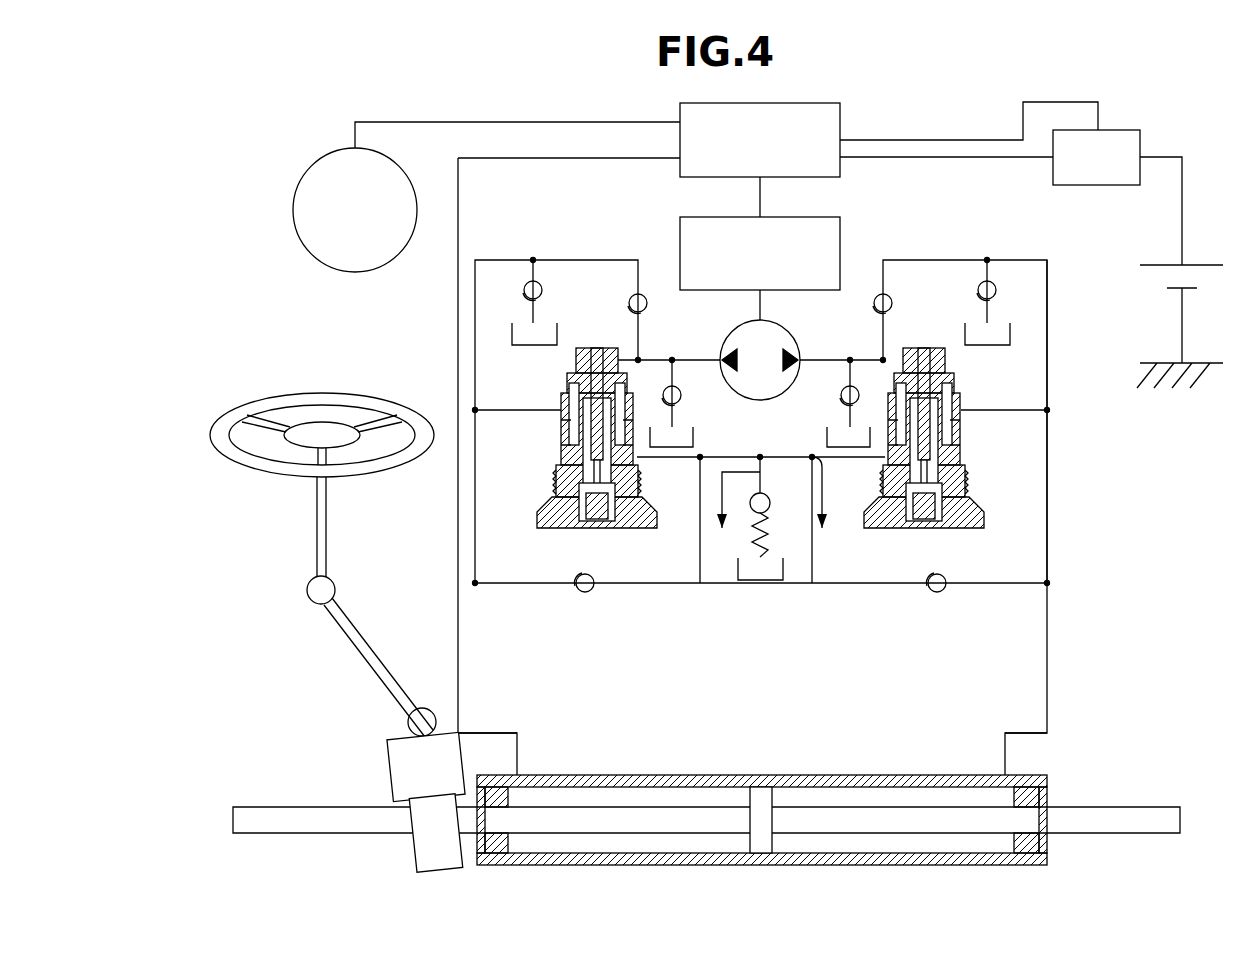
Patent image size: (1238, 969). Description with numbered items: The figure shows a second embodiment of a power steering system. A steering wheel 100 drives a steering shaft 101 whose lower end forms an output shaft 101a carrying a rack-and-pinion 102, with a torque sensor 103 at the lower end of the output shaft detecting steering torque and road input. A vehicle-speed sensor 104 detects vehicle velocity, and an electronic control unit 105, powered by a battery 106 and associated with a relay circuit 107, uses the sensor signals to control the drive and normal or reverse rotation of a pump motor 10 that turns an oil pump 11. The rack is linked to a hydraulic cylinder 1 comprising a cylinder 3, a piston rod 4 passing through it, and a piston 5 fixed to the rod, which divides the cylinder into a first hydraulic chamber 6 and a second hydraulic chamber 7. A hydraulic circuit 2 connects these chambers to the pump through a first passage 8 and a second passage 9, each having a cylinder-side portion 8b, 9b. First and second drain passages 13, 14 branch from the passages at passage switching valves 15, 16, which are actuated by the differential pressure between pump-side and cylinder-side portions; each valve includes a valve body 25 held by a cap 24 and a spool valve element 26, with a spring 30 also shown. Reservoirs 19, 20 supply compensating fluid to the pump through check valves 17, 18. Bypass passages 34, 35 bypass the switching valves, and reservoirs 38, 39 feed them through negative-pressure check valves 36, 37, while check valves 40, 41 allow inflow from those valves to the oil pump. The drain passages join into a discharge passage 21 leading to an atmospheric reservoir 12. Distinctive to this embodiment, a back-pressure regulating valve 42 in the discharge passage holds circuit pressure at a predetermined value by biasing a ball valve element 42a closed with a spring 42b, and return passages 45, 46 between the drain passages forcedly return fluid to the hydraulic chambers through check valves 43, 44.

The hydraulic cylinder 1 is at (772, 872).
The hydraulic circuit 2 is at (1070, 452).
The cylinder 3 is at (940, 778).
The piston rod 4 is at (810, 815).
The piston 5 is at (758, 790).
The first hydraulic chamber 6 is at (682, 793).
The second hydraulic chamber 7 is at (878, 797).
The first passage 8 is at (478, 688).
The cylinder-side passage portion 8b is at (478, 628).
The second passage 9 is at (1047, 690).
The cylinder-side passage portion 9b is at (1047, 645).
The pump motor 10 is at (843, 237).
The oil pump 11 is at (790, 328).
The reservoir 12 is at (762, 582).
The first drain passage 13 is at (688, 462).
The second drain passage 14 is at (825, 462).
The first passage switching valve 15 is at (538, 485).
The second passage switching valve 16 is at (975, 470).
The check valve 17 is at (684, 396).
The check valve 18 is at (838, 396).
The first reservoir 19 is at (827, 437).
The second reservoir 20 is at (695, 437).
The discharge passage 21 is at (765, 470).
The cap 24 is at (640, 530).
The valve body 25 is at (570, 428).
The spool valve element 26 is at (592, 450).
The spring 30 is at (582, 530).
The bypass passage 34 is at (565, 260).
The bypass passage 35 is at (947, 260).
The negative-pressure check valve 36 is at (528, 275).
The negative-pressure check valve 37 is at (997, 288).
The reservoir 38 is at (512, 330).
The reservoir 39 is at (965, 335).
The check valve 40 is at (640, 292).
The check valve 41 is at (876, 294).
The back-pressure regulating valve 42 is at (770, 530).
The ball valve element 42a is at (750, 508).
The spring 42b is at (785, 570).
The check valve 43 is at (591, 593).
The check valve 44 is at (942, 593).
The return passage 45 is at (668, 586).
The return passage 46 is at (880, 586).
The steering wheel 100 is at (258, 395).
The steering shaft 101 is at (313, 518).
The output shaft 101a is at (360, 650).
The rack-and-pinion 102 is at (412, 852).
The torque sensor 103 is at (390, 780).
The vehicle-speed sensor 104 is at (310, 165).
The electronic control unit 105 is at (842, 128).
The battery 106 is at (1158, 262).
The relay circuit 107 is at (1128, 130).